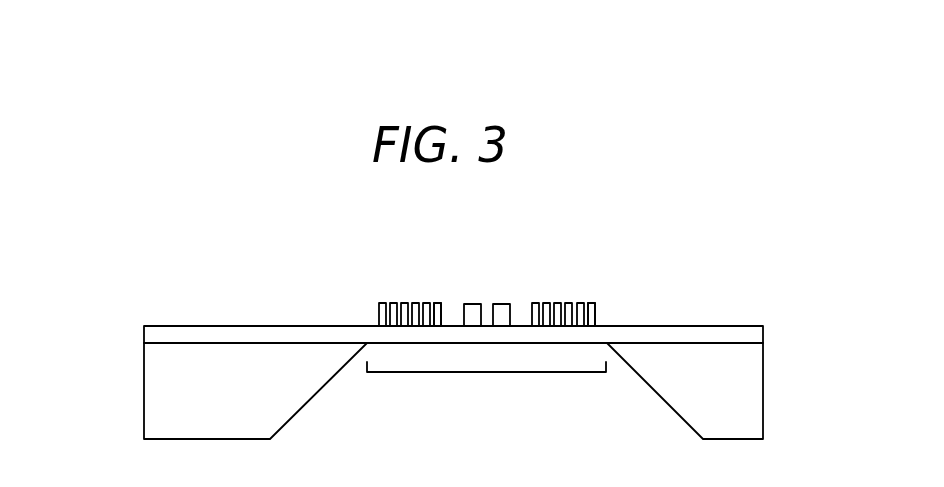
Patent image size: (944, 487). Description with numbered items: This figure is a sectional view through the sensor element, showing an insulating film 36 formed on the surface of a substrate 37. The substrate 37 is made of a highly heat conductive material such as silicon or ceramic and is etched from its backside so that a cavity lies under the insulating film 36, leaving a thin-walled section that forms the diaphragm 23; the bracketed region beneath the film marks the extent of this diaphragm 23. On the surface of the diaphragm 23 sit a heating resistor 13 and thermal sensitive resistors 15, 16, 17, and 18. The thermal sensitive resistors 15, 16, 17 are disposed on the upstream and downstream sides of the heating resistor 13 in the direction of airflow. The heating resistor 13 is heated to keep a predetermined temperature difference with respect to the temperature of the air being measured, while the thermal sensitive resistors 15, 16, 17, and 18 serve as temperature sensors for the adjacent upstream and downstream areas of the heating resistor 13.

The heating resistor 13 is at (472, 292).
The thermal sensitive resistor 15 is at (438, 302).
The thermal sensitive resistor 16 is at (534, 302).
The thermal sensitive resistor 17 is at (591, 302).
The thermal sensitive resistor 18 is at (382, 302).
The diaphragm 23 is at (489, 372).
The insulating film 36 is at (167, 326).
The substrate 37 is at (158, 381).